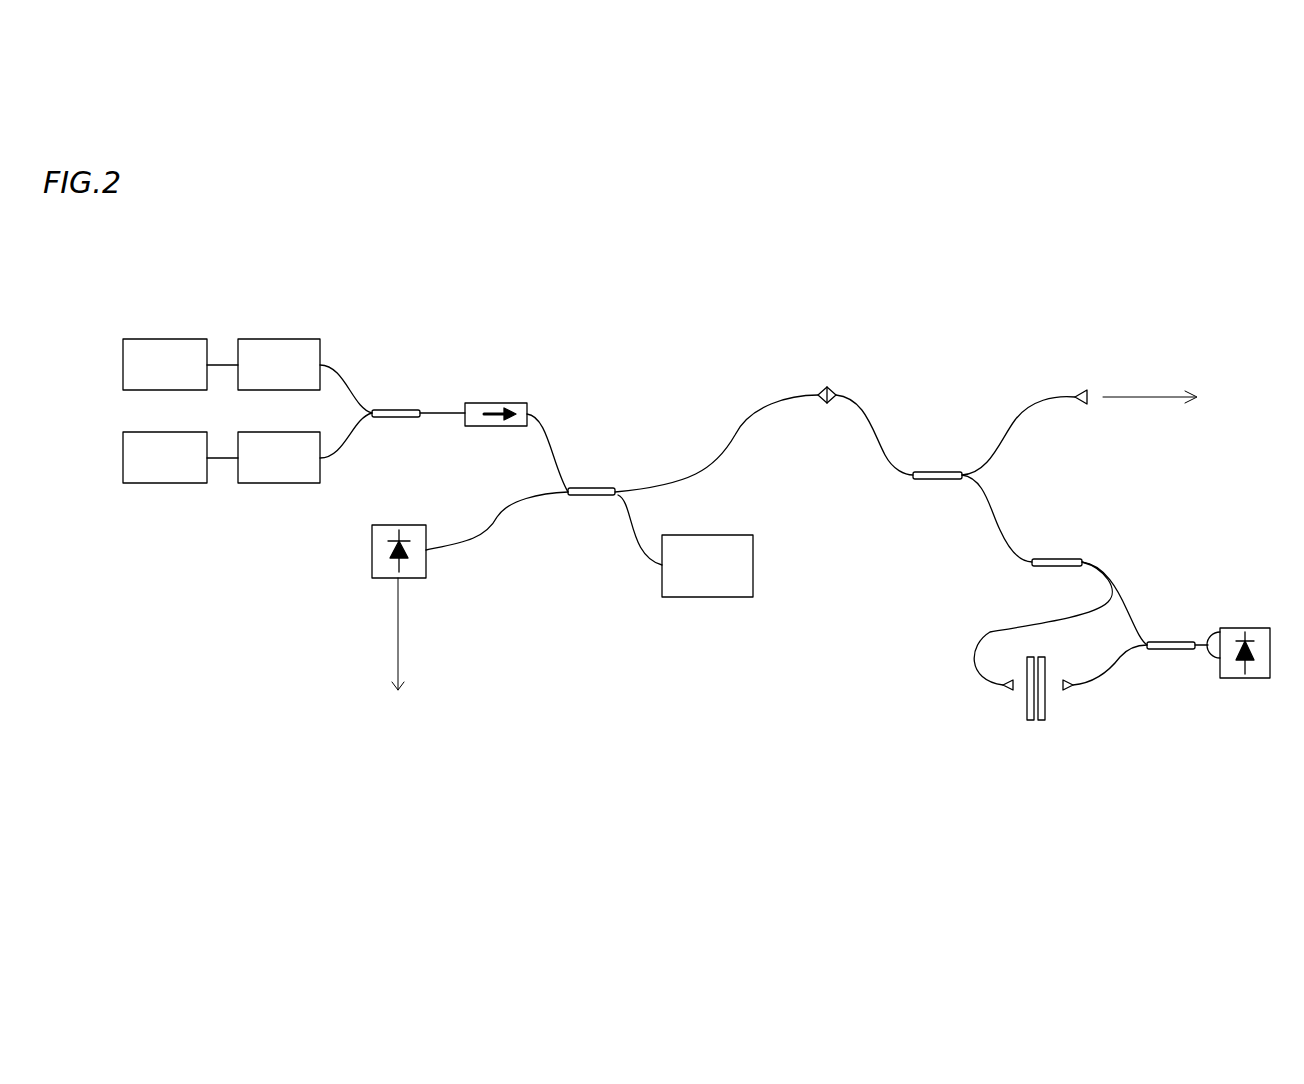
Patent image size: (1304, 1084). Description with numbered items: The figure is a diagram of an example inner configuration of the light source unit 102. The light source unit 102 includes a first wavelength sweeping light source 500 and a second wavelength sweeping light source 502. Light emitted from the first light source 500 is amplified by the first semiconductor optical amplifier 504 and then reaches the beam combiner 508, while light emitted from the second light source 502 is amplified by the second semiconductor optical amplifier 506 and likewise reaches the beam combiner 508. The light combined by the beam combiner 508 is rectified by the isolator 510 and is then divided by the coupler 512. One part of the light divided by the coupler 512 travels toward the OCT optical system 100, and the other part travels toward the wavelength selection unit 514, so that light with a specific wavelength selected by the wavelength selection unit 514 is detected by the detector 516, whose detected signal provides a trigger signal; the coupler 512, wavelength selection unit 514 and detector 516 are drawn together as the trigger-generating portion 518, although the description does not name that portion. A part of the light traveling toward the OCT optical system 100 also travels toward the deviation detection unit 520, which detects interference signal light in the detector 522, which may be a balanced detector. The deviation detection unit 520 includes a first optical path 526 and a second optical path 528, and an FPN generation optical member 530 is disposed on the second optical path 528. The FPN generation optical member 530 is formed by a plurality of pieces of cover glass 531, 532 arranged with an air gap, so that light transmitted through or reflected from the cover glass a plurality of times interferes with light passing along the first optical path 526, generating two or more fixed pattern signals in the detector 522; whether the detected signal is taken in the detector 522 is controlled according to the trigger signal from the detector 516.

The OCT optical system 100 is at (1212, 367).
The light source unit 102 is at (297, 544).
The first wavelength sweeping light source 500 is at (165, 339).
The second wavelength sweeping light source 502 is at (162, 483).
The first semiconductor optical amplifier 504 is at (282, 339).
The second semiconductor optical amplifier 506 is at (283, 483).
The beam combiner 508 is at (373, 410).
The isolator 510 is at (465, 403).
The coupler 512 is at (590, 488).
The wavelength selection unit 514 is at (753, 575).
The detector 516 is at (372, 547).
The trigger generator 518 is at (559, 554).
The deviation detection unit 520 is at (1053, 653).
The detector 522 is at (1248, 680).
The first optical path 526 is at (1152, 583).
The second optical path 528 is at (990, 632).
The FPN generation optical member 530 is at (1040, 768).
The cover glass 531 is at (1113, 745).
The cover glass 532 is at (1087, 716).